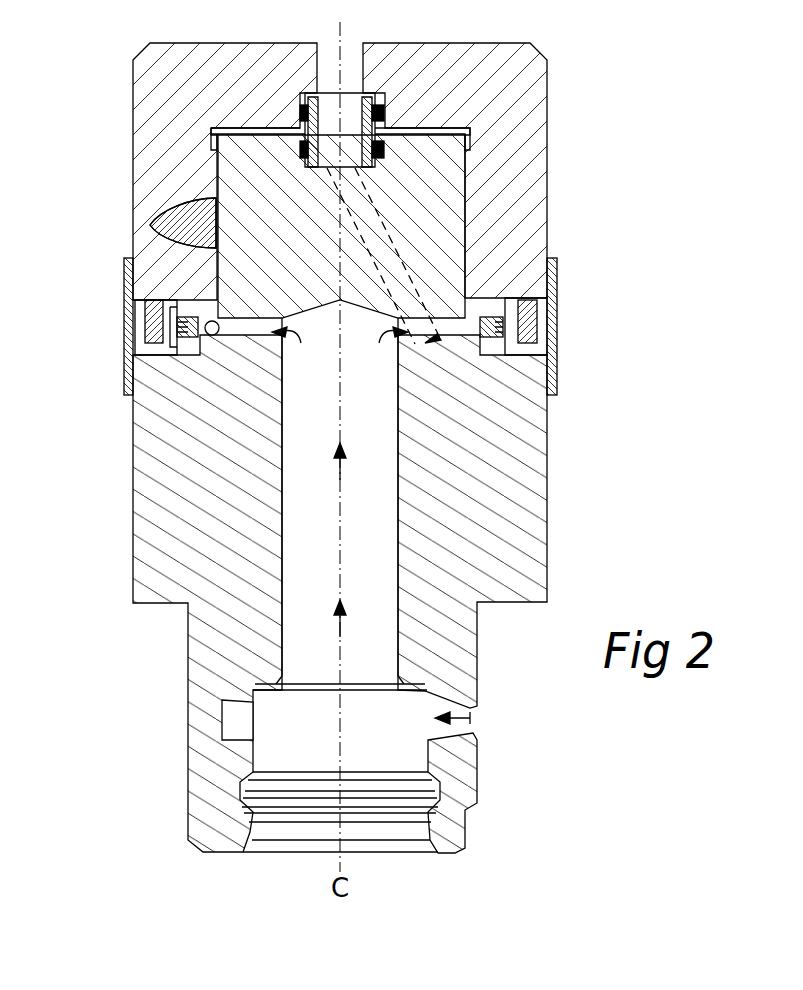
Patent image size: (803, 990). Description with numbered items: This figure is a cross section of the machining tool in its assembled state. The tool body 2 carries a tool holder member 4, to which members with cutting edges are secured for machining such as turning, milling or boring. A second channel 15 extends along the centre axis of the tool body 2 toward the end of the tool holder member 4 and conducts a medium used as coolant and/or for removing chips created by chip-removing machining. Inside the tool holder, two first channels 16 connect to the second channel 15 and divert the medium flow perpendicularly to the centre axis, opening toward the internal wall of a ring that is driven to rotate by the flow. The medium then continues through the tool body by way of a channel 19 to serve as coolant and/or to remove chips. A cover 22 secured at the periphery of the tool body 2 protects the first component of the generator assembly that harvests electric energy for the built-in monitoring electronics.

The tool body 2 is at (133, 561).
The tool holder member 4 is at (545, 88).
The second channel 15 is at (380, 490).
The first channels 16 is at (240, 332).
The channel 19 is at (375, 237).
The cover 22 is at (125, 312).